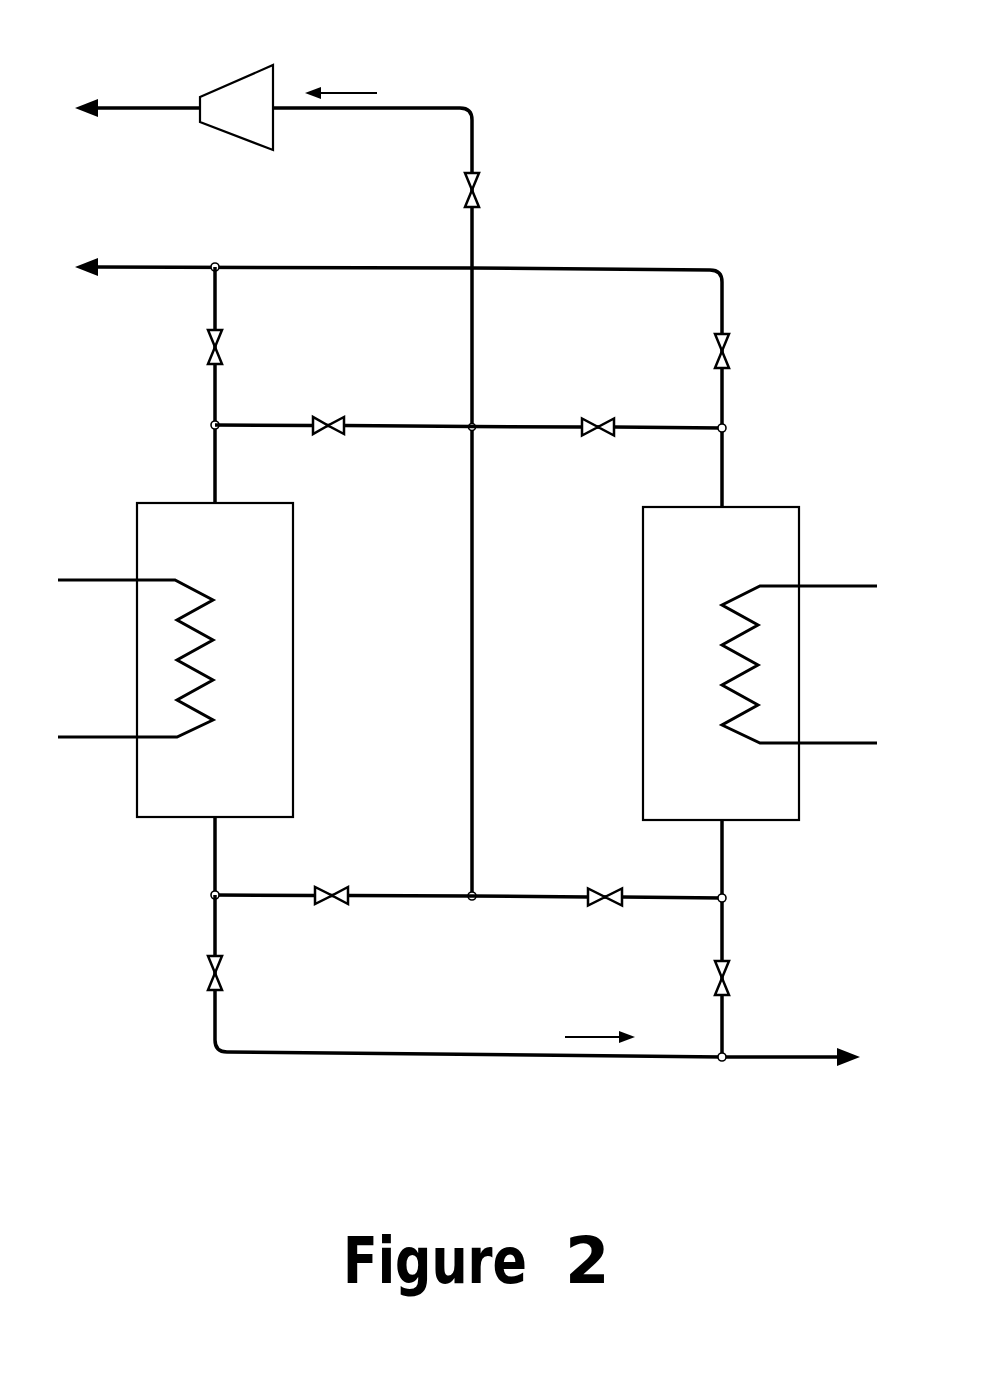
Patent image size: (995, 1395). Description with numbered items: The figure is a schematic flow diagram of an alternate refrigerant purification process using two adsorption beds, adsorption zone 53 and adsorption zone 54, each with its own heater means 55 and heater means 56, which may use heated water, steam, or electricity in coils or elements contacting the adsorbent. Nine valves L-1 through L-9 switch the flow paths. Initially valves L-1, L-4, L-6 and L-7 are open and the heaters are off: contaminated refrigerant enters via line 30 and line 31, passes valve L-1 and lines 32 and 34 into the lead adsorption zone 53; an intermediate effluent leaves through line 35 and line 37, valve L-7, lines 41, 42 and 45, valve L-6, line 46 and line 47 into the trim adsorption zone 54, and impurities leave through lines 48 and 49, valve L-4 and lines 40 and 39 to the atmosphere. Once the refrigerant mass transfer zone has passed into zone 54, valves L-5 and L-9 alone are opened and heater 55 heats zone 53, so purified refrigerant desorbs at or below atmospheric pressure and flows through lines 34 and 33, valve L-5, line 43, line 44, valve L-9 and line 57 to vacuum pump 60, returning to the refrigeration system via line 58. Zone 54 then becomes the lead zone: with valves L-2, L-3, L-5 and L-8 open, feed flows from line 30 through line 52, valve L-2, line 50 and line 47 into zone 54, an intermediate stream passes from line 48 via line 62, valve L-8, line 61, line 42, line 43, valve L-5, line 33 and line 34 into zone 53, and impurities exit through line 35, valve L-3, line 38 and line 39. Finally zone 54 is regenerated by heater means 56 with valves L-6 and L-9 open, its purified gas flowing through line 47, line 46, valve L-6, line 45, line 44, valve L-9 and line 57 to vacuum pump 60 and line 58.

The line 30 is at (147, 267).
The line 31 is at (213, 313).
The line 32 is at (214, 383).
The line 33 is at (240, 425).
The line 34 is at (214, 460).
The line 35 is at (214, 860).
The line 37 is at (267, 895).
The line 38 is at (214, 1018).
The line 39 is at (772, 1057).
The line 40 is at (722, 1020).
The line 41 is at (385, 896).
The line 42 is at (472, 605).
The line 43 is at (370, 426).
The line 44 is at (472, 352).
The line 45 is at (498, 427).
The line 46 is at (635, 427).
The line 47 is at (722, 478).
The line 48 is at (722, 883).
The line 49 is at (722, 952).
The line 50 is at (722, 390).
The line 52 is at (580, 269).
The adsorption zone 53 is at (293, 603).
The adsorption zone 54 is at (643, 602).
The heater means 55 is at (102, 580).
The heater means 56 is at (832, 586).
The line 57 is at (390, 106).
The line 58 is at (117, 108).
The vacuum pump 60 is at (273, 65).
The line 61 is at (505, 896).
The line 62 is at (630, 897).
The valve L-1 is at (219, 333).
The valve L-2 is at (720, 334).
The valve L-3 is at (210, 957).
The valve L-4 is at (713, 962).
The valve L-5 is at (344, 434).
The valve L-6 is at (612, 435).
The valve L-7 is at (350, 905).
The valve L-8 is at (622, 906).
The valve L-9 is at (478, 173).